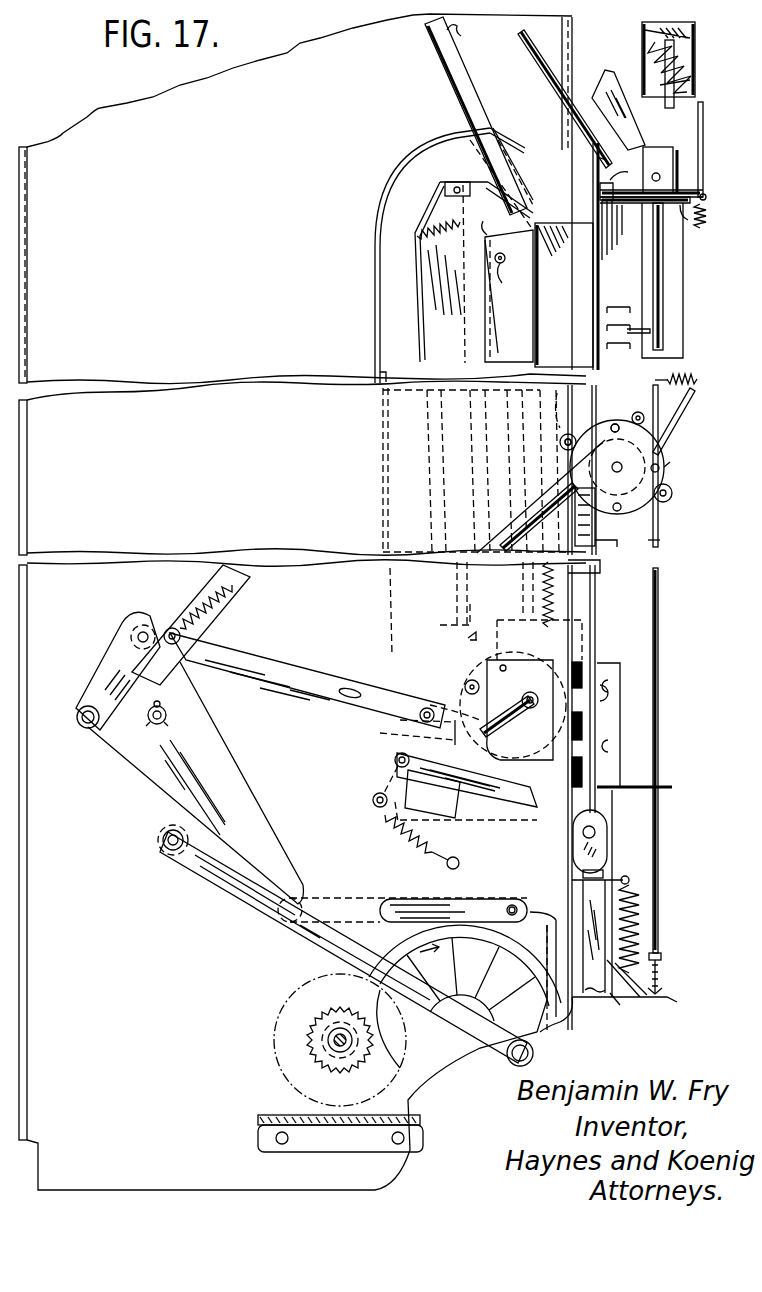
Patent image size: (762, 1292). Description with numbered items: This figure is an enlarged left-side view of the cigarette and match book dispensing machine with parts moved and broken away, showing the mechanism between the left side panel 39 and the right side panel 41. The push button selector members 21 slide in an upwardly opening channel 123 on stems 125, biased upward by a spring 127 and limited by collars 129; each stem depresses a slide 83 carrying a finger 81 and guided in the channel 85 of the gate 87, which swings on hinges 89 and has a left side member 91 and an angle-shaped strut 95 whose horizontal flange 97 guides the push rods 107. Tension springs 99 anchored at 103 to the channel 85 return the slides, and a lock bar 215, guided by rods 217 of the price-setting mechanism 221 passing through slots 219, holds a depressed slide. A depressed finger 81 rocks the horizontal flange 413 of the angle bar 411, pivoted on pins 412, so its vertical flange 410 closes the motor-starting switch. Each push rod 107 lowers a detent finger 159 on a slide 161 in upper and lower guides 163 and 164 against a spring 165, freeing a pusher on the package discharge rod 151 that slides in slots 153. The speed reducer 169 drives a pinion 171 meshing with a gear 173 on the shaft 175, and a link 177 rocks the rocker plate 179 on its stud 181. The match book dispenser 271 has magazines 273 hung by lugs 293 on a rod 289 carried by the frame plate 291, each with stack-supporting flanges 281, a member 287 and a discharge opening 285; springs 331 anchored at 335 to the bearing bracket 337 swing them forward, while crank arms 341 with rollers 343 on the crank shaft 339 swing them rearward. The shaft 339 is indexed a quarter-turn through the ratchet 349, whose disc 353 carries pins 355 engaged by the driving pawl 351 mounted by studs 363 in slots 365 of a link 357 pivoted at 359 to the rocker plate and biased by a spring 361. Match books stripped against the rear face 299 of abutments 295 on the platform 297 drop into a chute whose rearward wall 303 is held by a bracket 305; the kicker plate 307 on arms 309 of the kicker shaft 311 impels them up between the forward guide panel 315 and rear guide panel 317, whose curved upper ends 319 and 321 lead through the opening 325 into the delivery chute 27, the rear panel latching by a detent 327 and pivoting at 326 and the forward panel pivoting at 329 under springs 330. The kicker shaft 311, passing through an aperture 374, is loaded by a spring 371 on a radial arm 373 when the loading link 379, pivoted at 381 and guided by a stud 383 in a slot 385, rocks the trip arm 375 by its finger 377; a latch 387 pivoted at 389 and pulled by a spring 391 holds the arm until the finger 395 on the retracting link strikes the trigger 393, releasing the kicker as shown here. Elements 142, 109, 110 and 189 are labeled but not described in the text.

The right hand vertical side panel 41 is at (302, 602).
The delivery chute 27 is at (462, 78).
The clip 142 is at (456, 32).
The upper end of rear guide panel 321 is at (388, 180).
The detent 327 is at (500, 138).
The opening in rear wall of delivery chute 325 is at (515, 163).
The upper end of forward guide panel 319 is at (497, 190).
The forward guide panel 315 is at (420, 345).
The pivot of forward panel 329 is at (452, 184).
The springs 330 is at (439, 220).
The match book magazines 273 is at (493, 330).
The vertical frame plate 291 is at (483, 223).
The lugs 293 is at (515, 250).
The horizontal transverse rod 289 is at (513, 274).
The channel 85 is at (600, 272).
The fingers 81 is at (604, 78).
The generally vertical flange of angle bar 410 is at (606, 160).
The pivot pins 412 is at (652, 170).
The angle bar 411 is at (606, 178).
The generally horizontal flange of angle bar 413 is at (606, 198).
The post 109 is at (704, 158).
The bracket 110 is at (705, 178).
The spring connection to channel 103 is at (707, 195).
The tension springs 99 is at (708, 214).
The lock bar 215 is at (698, 222).
The push button selector members 21 is at (696, 32).
The stem 125 is at (655, 55).
The upwardly opening channel 123 is at (695, 66).
The spring 127 is at (692, 82).
The collars 129 is at (665, 100).
The elongate lengthwise slots 219 is at (645, 215).
The slides 83 is at (685, 314).
The vertically positioned rods 217 is at (665, 280).
The price-setting mechanism 221 is at (620, 348).
The rear guide panel 317 is at (375, 343).
The left hand vertical side panel 39 is at (275, 545).
The crank shaft 339 is at (617, 460).
The bearing bracket 337 is at (688, 410).
The tension springs 331 is at (694, 372).
The spring connection to bearing bracket 335 is at (700, 382).
The rollers 343 is at (699, 508).
The pins 355 is at (615, 424).
The crank arms 341 is at (558, 432).
The ratchet 349 is at (668, 458).
The driving pawl 351 is at (490, 522).
The disc 353 is at (617, 512).
The push rods 107 is at (660, 530).
The match book dispenser 271 is at (652, 545).
The rocker plate 179 is at (238, 790).
The pivot of link to rocker plate 359 is at (80, 708).
The link 357 is at (226, 604).
The spring 361 is at (200, 607).
The pivotal connection of loading link 381 is at (130, 628).
The studs 363 is at (180, 636).
The elongate longitudinal slots 365 is at (161, 701).
The stud 181 is at (166, 715).
The loading link 379 is at (285, 690).
The elongate longitudinal slot 385 is at (355, 688).
The stud 383 is at (425, 706).
The pivot of rear panel 326 is at (445, 680).
The link 177 is at (330, 944).
The bar 189 is at (470, 898).
The elongate horizontal slots 153 is at (370, 898).
The package discharge rod 151 is at (514, 902).
The transverse shaft 175 is at (490, 1012).
The gear 173 is at (368, 1000).
The pinion 171 is at (352, 1055).
The speed reducer 169 is at (292, 1002).
The lower angle-shaped guide 164 is at (573, 1004).
The rear face of abutment 299 is at (470, 660).
The kicker shaft 311 is at (548, 705).
The arms 309 is at (522, 696).
The radial trip arm 375 is at (503, 722).
The radial arm 373 is at (540, 652).
The finger 377 is at (465, 740).
The latch 387 is at (510, 780).
The finger 395 is at (426, 802).
The pivot of latch 389 is at (396, 757).
The trigger 393 is at (378, 795).
The spring 391 is at (385, 822).
The curved rearward wall 303 is at (478, 822).
The kicker plate 307 is at (380, 720).
The bracket 305 is at (380, 733).
The member 287 is at (527, 596).
The discharge opening 285 is at (445, 625).
The stack-supporting flanges 281 is at (468, 638).
The loading spring 371 is at (560, 595).
The left vertical side member 91 is at (590, 578).
The gate 87 is at (603, 642).
The match book discharging abutments 295 is at (600, 656).
The platform 297 is at (605, 676).
The aperture 374 is at (585, 706).
The angle-shaped strut 95 is at (596, 723).
The hinges 89 is at (596, 744).
The horizontal flange 97 is at (672, 787).
The upper angle-shaped guide 163 is at (610, 880).
The springs 165 is at (640, 915).
The detent fingers 159 is at (624, 989).
The slide 161 is at (612, 1000).